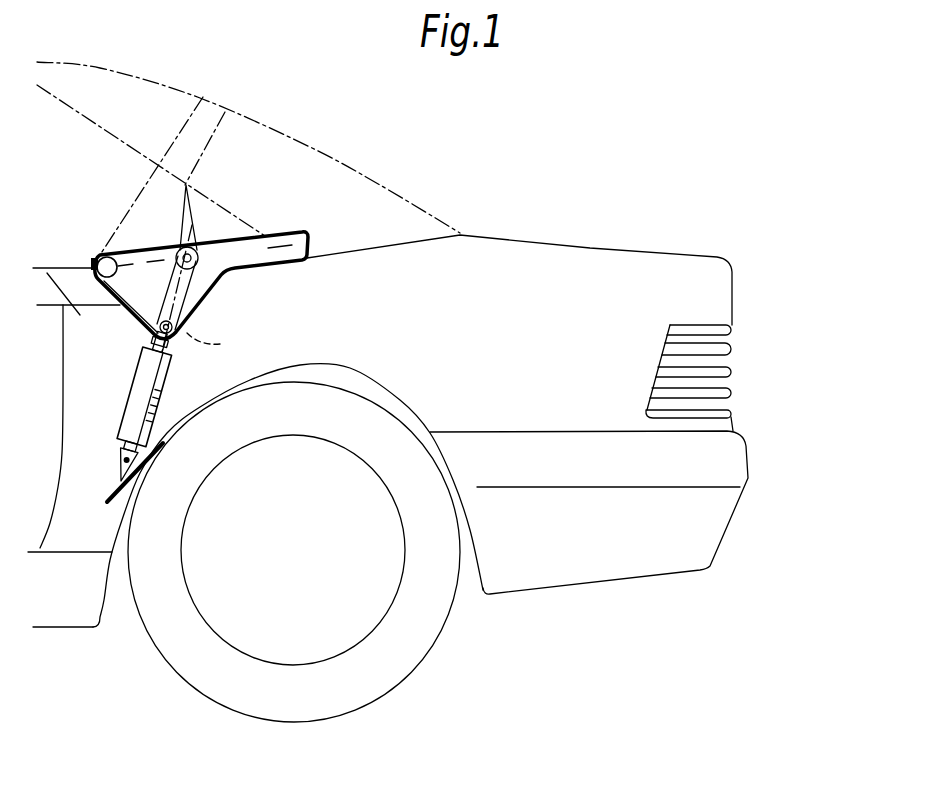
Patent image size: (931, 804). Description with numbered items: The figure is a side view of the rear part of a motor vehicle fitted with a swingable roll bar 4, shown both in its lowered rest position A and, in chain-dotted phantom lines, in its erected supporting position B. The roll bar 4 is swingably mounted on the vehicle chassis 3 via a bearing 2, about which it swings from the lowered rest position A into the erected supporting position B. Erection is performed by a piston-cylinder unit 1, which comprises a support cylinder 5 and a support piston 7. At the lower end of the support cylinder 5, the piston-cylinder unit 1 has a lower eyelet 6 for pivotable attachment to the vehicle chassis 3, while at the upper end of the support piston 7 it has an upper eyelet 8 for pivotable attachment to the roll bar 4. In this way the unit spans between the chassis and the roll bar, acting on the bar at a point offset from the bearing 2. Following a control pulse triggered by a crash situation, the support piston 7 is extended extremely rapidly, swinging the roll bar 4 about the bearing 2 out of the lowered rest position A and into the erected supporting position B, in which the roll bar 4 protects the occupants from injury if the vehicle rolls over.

The piston-cylinder unit 1 is at (144, 391).
The bearing 2 is at (97, 257).
The vehicle chassis 3 is at (85, 291).
The roll bar 4 is at (146, 189).
The support cylinder 5 is at (137, 402).
The lower eyelet 6 is at (122, 483).
The support piston 7 is at (103, 286).
The upper eyelet 8 is at (208, 200).
The lowered rest position A is at (274, 232).
The erected supporting position B is at (184, 118).